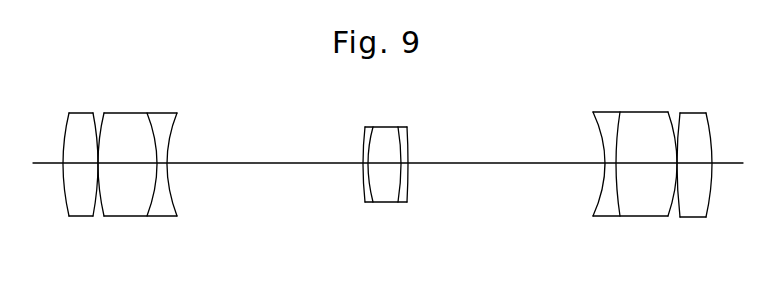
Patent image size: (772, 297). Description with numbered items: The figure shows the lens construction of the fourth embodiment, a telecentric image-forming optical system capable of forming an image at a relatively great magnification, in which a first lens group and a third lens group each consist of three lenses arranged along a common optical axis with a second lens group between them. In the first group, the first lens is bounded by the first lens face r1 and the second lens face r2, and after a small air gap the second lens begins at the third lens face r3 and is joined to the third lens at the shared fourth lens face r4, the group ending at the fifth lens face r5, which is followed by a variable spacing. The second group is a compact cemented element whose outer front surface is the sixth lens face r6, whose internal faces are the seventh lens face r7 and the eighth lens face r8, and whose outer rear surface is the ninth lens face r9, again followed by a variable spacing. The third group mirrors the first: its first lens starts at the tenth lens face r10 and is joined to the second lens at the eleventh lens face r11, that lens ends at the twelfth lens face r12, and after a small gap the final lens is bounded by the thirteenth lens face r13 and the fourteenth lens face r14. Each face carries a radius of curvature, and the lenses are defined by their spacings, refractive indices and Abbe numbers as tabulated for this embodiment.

The first lens face r1 is at (63, 180).
The second lens face r2 is at (94, 200).
The third lens face r3 is at (103, 214).
The fourth lens face r4 is at (157, 143).
The fifth lens face r5 is at (172, 190).
The sixth lens face r6 is at (364, 170).
The seventh lens face r7 is at (370, 195).
The eighth lens face r8 is at (400, 143).
The ninth lens face r9 is at (408, 158).
The tenth lens face r10 is at (596, 119).
The eleventh lens face r11 is at (615, 175).
The twelfth lens face r12 is at (670, 200).
The thirteenth lens face r13 is at (678, 208).
The fourteenth lens face r14 is at (711, 194).